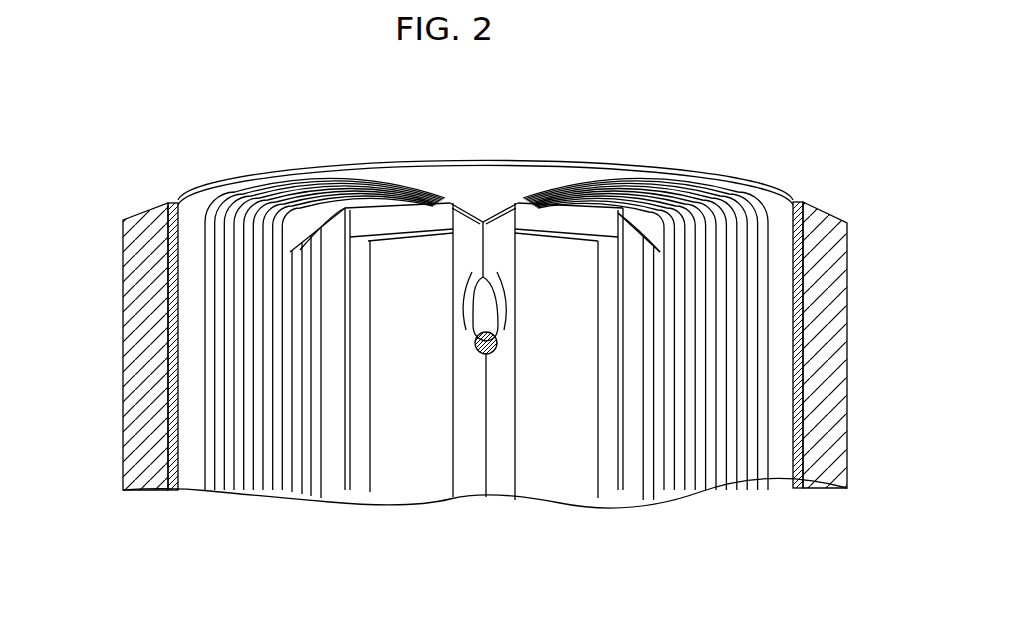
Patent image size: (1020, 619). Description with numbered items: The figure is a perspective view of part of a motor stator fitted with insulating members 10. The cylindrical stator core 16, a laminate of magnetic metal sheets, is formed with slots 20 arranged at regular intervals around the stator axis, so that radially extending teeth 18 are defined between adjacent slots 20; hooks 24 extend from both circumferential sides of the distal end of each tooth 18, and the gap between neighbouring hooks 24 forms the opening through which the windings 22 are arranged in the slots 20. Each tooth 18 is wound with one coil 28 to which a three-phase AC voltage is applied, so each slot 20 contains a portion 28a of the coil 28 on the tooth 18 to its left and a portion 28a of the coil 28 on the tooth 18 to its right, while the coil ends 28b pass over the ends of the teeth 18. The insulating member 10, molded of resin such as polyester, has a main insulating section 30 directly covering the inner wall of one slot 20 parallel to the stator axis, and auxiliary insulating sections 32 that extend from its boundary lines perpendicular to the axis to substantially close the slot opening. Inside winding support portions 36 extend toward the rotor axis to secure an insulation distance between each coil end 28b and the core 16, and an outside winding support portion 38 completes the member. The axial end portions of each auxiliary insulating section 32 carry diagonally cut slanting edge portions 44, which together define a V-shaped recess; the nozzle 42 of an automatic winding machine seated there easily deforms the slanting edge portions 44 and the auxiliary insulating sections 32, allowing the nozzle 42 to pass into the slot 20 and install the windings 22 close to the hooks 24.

The insulating member 10 is at (523, 148).
The stator core 16 is at (140, 206).
The tooth 18 is at (398, 470).
The slot 20 is at (487, 182).
The winding 22 is at (395, 174).
The hook 24 is at (363, 483).
The coil 28 is at (250, 195).
The portion of coil 28a is at (248, 392).
The coil end 28b is at (303, 182).
The main insulating section 30 is at (190, 357).
The auxiliary insulating section 32 is at (332, 473).
The inside winding support portion 36 is at (377, 220).
The outside winding support portion 38 is at (197, 192).
The nozzle 42 is at (483, 322).
The slanting edge portion 44 is at (468, 213).